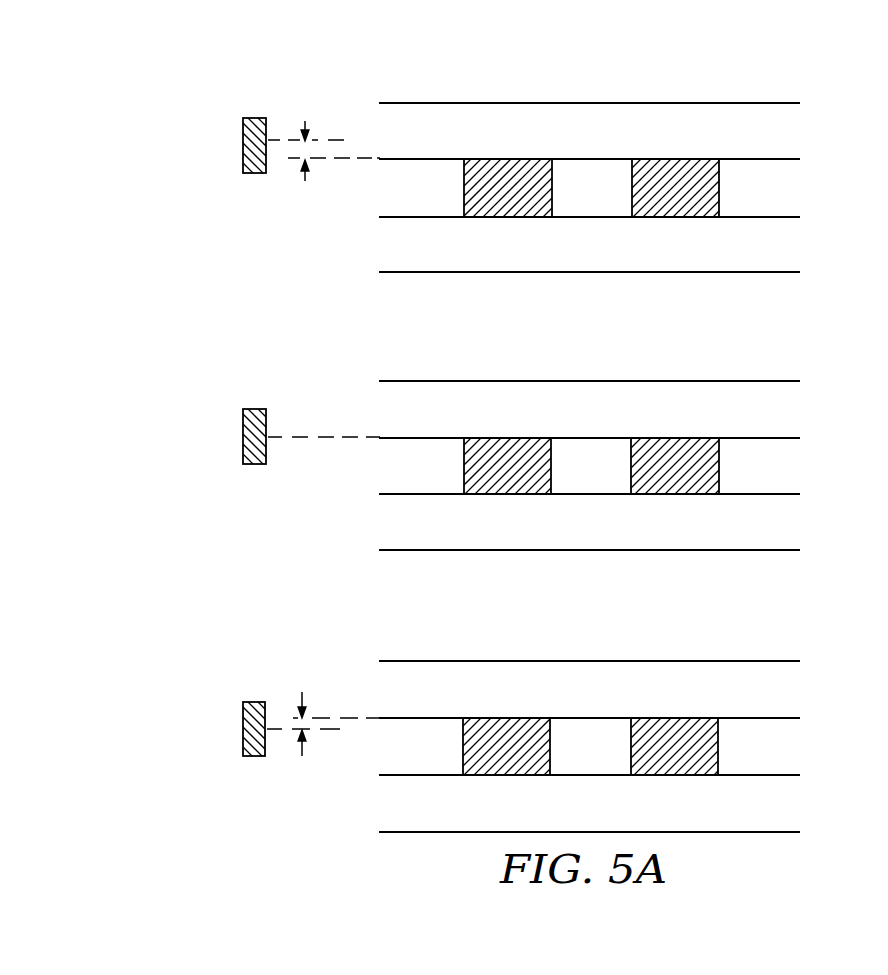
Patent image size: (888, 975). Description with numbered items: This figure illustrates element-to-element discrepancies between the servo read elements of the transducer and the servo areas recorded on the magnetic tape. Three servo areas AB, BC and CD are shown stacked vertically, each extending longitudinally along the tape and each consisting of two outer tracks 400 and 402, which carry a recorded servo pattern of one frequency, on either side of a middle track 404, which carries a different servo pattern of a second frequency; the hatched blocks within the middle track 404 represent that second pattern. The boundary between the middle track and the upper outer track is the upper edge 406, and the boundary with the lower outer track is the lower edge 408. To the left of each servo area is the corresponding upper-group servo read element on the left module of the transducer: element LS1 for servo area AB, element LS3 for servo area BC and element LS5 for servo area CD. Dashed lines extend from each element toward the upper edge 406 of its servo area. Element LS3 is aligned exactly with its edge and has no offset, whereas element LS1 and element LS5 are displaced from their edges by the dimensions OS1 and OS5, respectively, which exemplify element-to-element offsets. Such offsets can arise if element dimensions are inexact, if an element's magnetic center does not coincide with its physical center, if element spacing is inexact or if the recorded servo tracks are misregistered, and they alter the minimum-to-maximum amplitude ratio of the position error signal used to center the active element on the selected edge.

The outer track 400 is at (793, 132).
The outer track 402 is at (792, 247).
The middle track 404 is at (793, 188).
The upper edge 406 is at (420, 157).
The lower edge 408 is at (416, 219).
The servo area AB is at (734, 86).
The servo area BC is at (733, 365).
The servo area CD is at (733, 645).
The servo read element LS1 is at (243, 145).
The servo read element LS3 is at (243, 437).
The servo read element LS5 is at (243, 727).
The element-to-element offset OS1 is at (307, 136).
The element-to-element offset OS5 is at (298, 710).